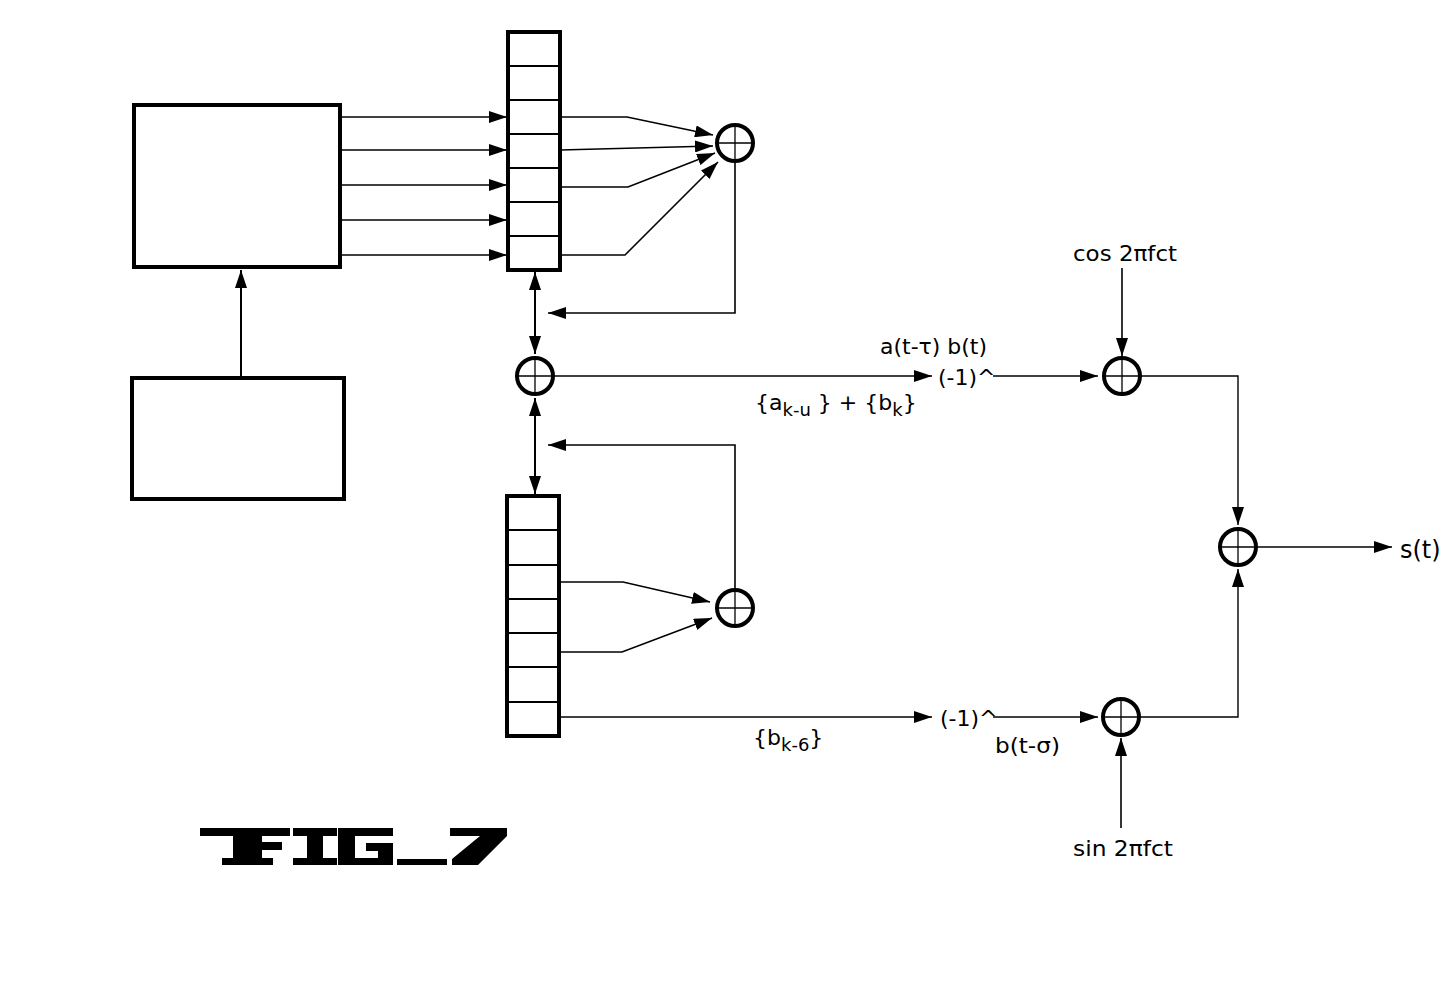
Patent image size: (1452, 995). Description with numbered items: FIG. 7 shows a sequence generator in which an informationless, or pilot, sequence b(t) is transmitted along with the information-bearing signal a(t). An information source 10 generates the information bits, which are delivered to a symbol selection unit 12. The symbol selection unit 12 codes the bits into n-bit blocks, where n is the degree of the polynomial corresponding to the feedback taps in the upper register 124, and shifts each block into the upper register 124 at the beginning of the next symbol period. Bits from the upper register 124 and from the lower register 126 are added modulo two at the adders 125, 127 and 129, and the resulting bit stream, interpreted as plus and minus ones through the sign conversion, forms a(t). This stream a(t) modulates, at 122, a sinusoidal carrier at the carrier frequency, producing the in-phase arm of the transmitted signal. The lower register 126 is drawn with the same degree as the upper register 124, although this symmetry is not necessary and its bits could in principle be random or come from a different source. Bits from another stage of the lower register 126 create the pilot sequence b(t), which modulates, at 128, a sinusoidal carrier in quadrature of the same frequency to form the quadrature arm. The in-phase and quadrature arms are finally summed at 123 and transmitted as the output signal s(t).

The information source 10 is at (347, 482).
The symbol selection unit 12 is at (302, 268).
The modulator 122 is at (1140, 357).
The summer 123 is at (1308, 497).
The upper register 124 is at (518, 151).
The mod 2 adder 125 is at (756, 148).
The lower register 126 is at (503, 681).
The mod 2 adder 127 is at (826, 578).
The quadrature modulator 128 is at (1195, 653).
The mod 2 adder 129 is at (510, 378).